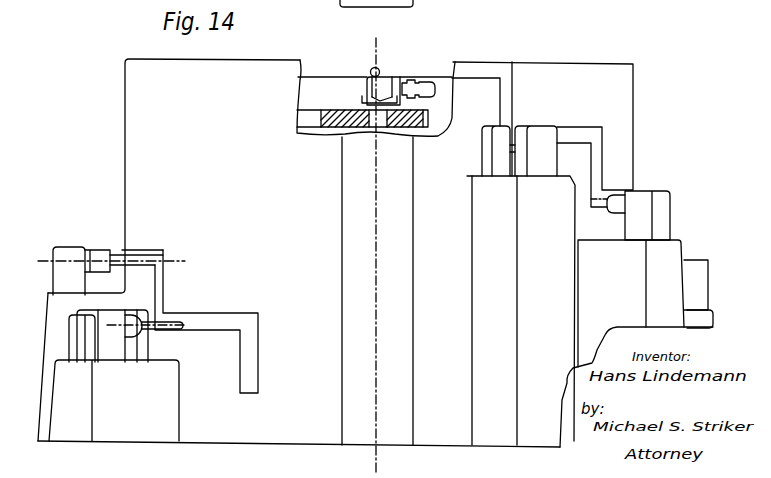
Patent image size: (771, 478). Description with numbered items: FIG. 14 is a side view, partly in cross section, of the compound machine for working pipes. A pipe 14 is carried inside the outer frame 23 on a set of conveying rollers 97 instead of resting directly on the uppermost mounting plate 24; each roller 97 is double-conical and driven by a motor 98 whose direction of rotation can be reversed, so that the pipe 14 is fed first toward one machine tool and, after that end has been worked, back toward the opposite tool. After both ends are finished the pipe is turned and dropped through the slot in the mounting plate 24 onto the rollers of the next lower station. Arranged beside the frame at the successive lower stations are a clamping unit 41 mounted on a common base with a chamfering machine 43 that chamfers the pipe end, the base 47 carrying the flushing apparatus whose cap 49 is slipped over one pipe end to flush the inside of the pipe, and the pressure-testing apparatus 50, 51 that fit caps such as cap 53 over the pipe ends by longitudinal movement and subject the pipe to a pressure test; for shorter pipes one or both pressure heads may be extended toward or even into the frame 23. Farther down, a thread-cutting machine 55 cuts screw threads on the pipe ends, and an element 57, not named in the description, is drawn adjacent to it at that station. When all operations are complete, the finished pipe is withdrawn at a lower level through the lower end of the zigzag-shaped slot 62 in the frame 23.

The pipe 14 is at (382, 68).
The outer frame 23 is at (138, 132).
The mounting plate 24 is at (345, 118).
The clamping unit 41 is at (495, 152).
The chamfering machine 43 is at (538, 137).
The base 47 is at (657, 203).
The cap 49 is at (615, 205).
The pressure-testing apparatus 50 is at (693, 270).
The pressure-testing apparatus 51 is at (68, 255).
The cap 53 is at (102, 257).
The thread-cutting machine 55 is at (108, 347).
The ball pin 57 is at (137, 333).
The zigzag-shaped slot 62 is at (222, 320).
The conveying roller 97 is at (372, 78).
The motor 98 is at (426, 85).